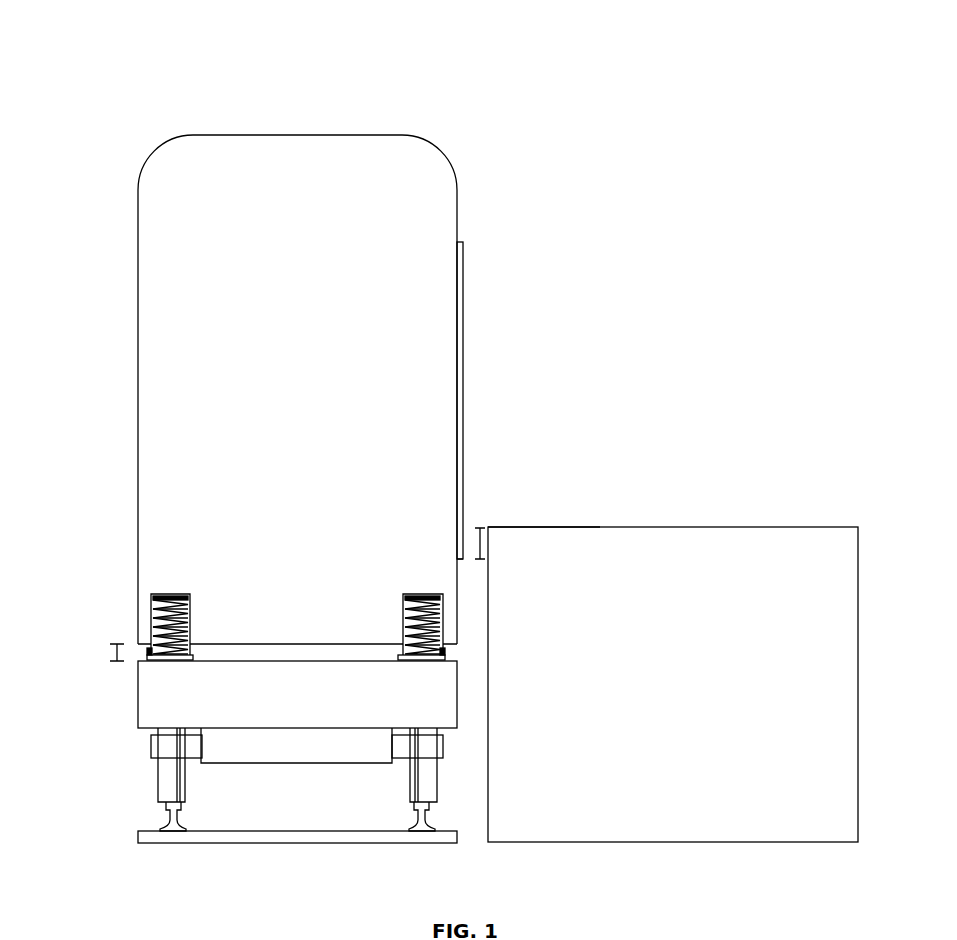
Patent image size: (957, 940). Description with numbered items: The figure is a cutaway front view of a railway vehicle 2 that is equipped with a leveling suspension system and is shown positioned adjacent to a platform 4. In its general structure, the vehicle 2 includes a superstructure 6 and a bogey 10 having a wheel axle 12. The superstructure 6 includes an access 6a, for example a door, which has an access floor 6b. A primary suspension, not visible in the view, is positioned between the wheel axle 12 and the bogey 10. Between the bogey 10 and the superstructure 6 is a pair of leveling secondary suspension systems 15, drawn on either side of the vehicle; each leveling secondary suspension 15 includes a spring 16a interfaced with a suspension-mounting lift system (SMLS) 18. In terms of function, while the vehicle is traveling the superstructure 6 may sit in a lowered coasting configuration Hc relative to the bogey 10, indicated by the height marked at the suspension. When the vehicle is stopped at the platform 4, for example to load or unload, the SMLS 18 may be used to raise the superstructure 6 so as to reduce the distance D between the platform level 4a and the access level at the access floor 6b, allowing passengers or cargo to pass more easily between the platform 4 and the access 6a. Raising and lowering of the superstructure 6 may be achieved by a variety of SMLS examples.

The railway vehicle 2 is at (549, 136).
The platform 4 is at (673, 684).
The platform level 4a is at (523, 527).
The superstructure 6 is at (223, 368).
The access 6a is at (463, 312).
The access floor 6b is at (447, 553).
The bogey 10 is at (190, 706).
The wheel axle 12 is at (155, 748).
The leveling secondary suspension systems 15 is at (233, 632).
The spring 16a is at (187, 617).
The suspension-mounting lift system 18 is at (195, 657).
The lowered coasting configuration Hc is at (112, 653).
The distance D is at (479, 546).